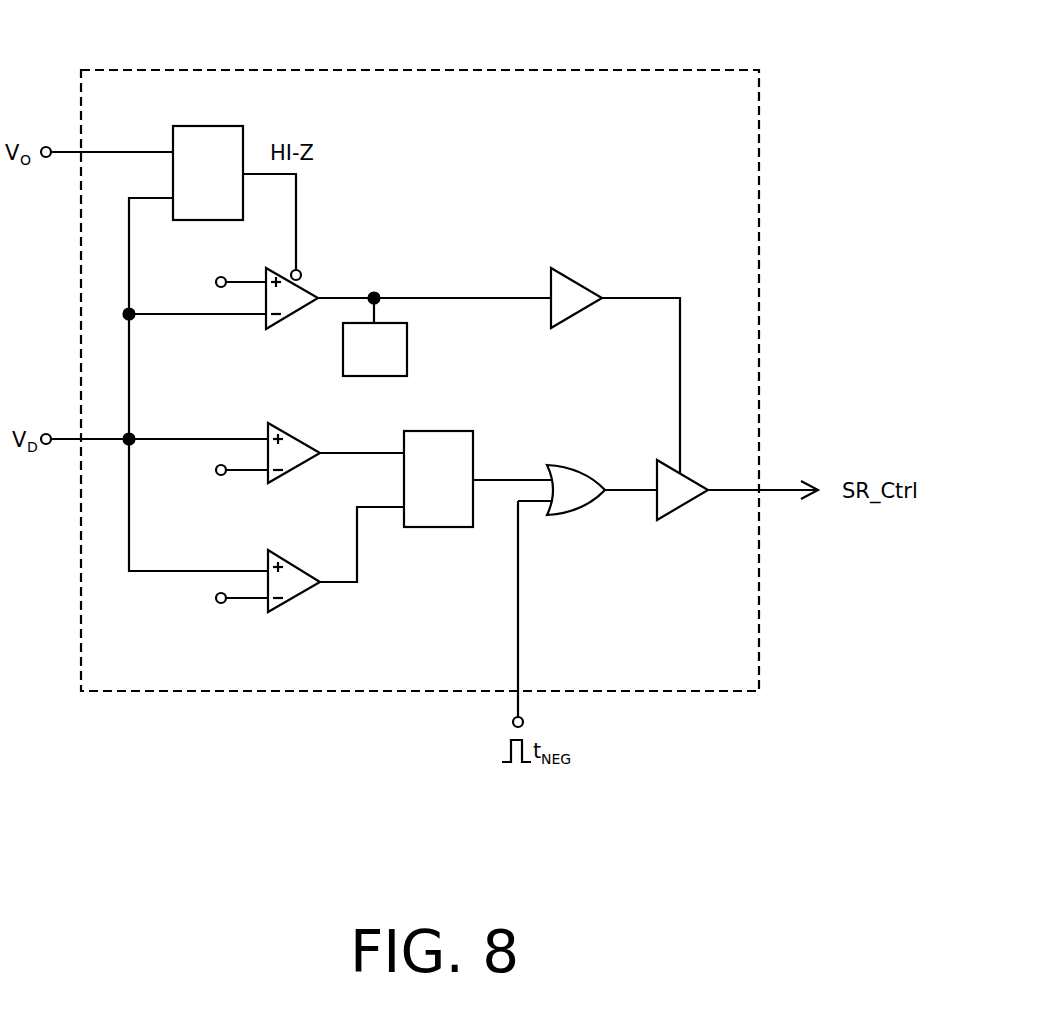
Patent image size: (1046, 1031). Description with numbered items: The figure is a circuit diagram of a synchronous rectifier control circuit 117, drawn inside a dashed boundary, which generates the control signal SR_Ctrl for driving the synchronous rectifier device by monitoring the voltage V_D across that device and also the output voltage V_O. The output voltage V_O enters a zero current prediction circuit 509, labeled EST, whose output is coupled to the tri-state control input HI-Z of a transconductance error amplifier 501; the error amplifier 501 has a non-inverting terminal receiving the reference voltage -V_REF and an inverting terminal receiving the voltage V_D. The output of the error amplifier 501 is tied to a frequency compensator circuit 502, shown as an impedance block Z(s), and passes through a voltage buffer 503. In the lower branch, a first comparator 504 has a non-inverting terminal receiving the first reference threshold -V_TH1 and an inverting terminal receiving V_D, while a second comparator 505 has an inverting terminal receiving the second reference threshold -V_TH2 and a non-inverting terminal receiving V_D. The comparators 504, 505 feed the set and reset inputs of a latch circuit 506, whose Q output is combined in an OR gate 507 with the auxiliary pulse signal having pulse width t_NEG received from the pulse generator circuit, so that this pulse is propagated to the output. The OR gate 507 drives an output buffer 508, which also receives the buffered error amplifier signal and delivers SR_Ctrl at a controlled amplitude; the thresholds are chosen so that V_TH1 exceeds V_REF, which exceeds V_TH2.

The synchronous rectifier control circuit 117 is at (420, 352).
The transconductance error amplifier 501 is at (266, 330).
The frequency compensator circuit 502 is at (407, 352).
The voltage buffer 503 is at (565, 322).
The first comparator 504 is at (268, 483).
The second comparator 505 is at (300, 595).
The latch circuit 506 is at (425, 527).
The OR gate 507 is at (570, 513).
The output buffer 508 is at (675, 510).
The zero current prediction circuit 509 is at (173, 137).